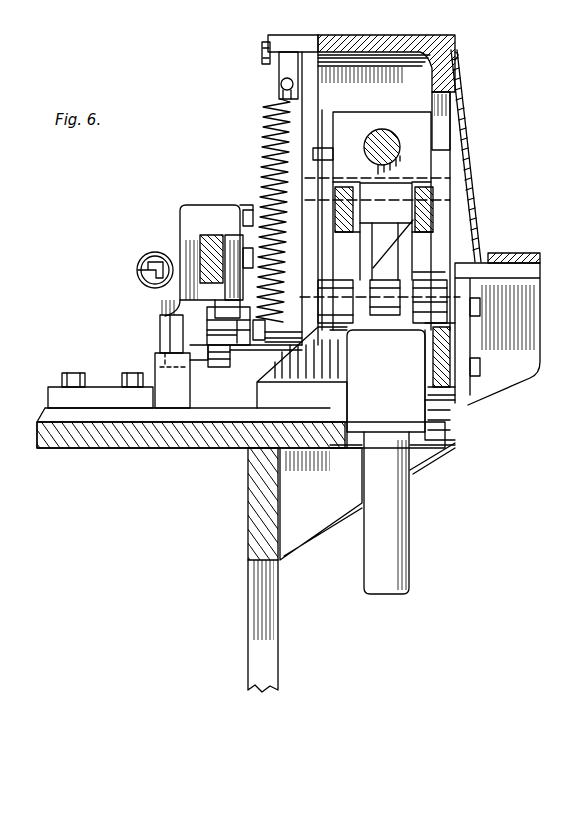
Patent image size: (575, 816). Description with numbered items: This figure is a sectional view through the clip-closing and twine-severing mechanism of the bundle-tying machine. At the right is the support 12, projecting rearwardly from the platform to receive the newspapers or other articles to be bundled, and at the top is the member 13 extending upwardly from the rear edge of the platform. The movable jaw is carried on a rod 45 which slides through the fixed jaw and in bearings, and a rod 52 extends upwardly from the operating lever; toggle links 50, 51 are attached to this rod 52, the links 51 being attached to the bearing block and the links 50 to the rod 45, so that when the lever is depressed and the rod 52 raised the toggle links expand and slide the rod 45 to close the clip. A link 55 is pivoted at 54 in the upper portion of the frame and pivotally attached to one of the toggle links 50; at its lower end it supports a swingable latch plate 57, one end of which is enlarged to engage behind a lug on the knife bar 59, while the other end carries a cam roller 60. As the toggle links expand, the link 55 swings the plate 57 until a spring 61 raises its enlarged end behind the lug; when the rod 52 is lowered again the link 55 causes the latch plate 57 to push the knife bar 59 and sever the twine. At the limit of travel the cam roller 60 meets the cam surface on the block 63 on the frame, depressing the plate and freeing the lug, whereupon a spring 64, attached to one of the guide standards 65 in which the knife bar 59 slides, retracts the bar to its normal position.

The support 12 is at (506, 260).
The member 13 is at (375, 40).
The rod 45 is at (395, 143).
The toggle links 50 is at (338, 160).
The toggle links 51 is at (348, 250).
The rod 52 is at (369, 558).
The pivot 54 is at (262, 50).
The link 55 is at (280, 86).
The latch plate 57 is at (240, 365).
The knife bar 59 is at (204, 258).
The cam roller 60 is at (168, 333).
The spring 61 is at (272, 128).
The block 63 is at (182, 396).
The spring 64 is at (150, 281).
The guide standards 65 is at (175, 313).